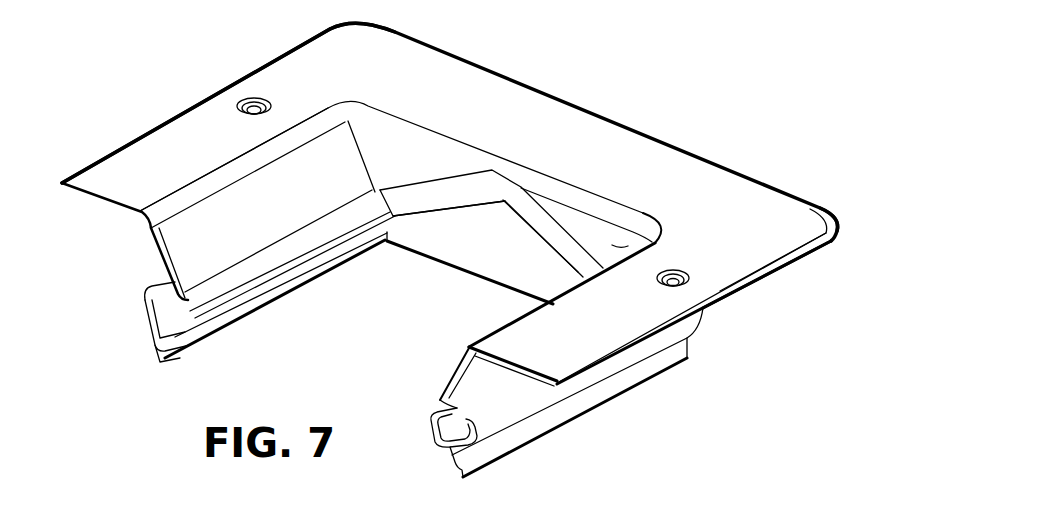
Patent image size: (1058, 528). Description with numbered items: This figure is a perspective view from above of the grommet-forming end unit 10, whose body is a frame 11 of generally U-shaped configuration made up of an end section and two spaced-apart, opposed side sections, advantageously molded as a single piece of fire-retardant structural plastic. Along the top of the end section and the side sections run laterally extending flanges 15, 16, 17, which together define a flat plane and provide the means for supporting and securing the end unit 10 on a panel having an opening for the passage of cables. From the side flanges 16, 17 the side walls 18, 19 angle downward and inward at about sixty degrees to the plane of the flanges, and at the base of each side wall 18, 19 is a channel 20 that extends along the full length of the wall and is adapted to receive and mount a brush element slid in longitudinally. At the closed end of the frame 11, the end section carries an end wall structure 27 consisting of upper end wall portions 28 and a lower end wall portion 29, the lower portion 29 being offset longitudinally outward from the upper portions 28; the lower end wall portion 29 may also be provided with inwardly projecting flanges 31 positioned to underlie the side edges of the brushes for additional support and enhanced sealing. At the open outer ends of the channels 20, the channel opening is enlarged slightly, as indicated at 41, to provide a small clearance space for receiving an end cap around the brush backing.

The grommet-forming end unit 10 is at (549, 144).
The frame 11 is at (643, 152).
The laterally extending flange 15 is at (493, 80).
The side flange 16 is at (158, 135).
The side flange 17 is at (737, 258).
The side wall 18 is at (190, 228).
The side wall 19 is at (450, 374).
The channel 20 is at (152, 325).
The end wall structure 27 is at (503, 252).
The upper end wall portion 28 is at (668, 236).
The lower end wall portion 29 is at (493, 270).
The inwardly projecting flange 31 is at (440, 203).
The enlarged area 41 is at (158, 312).